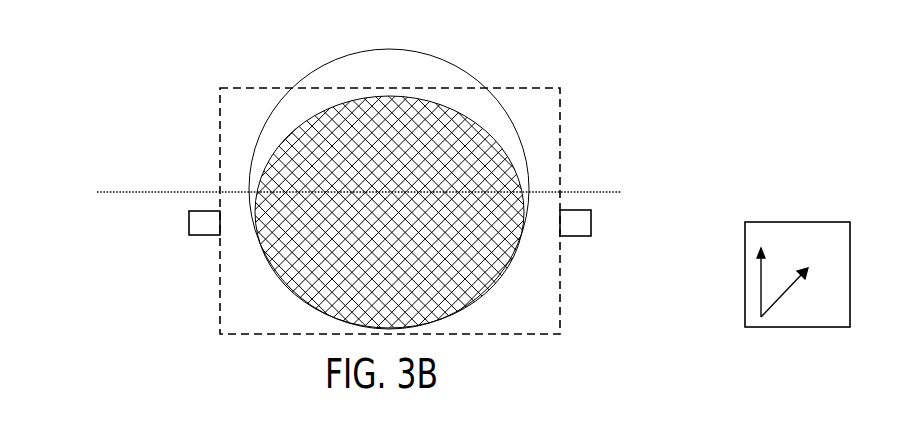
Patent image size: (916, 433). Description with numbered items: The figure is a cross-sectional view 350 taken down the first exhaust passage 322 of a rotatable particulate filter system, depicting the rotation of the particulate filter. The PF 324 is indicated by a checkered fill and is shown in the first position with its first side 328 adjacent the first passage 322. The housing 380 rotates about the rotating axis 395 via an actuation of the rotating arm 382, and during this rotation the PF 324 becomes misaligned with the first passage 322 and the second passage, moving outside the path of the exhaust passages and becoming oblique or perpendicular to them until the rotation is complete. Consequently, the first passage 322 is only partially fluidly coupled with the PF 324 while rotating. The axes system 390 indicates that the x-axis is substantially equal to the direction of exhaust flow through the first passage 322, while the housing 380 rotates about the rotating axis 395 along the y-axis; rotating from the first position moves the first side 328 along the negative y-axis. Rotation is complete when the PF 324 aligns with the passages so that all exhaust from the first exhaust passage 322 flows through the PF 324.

The first exhaust passage 322 is at (400, 49).
The particulate filter 324 is at (320, 303).
The first side 328 is at (290, 263).
The cross-sectional view 350 is at (657, 61).
The housing 380 is at (515, 88).
The rotating arm 382 is at (203, 235).
The axes system 390 is at (826, 222).
The rotating axis 395 is at (590, 192).